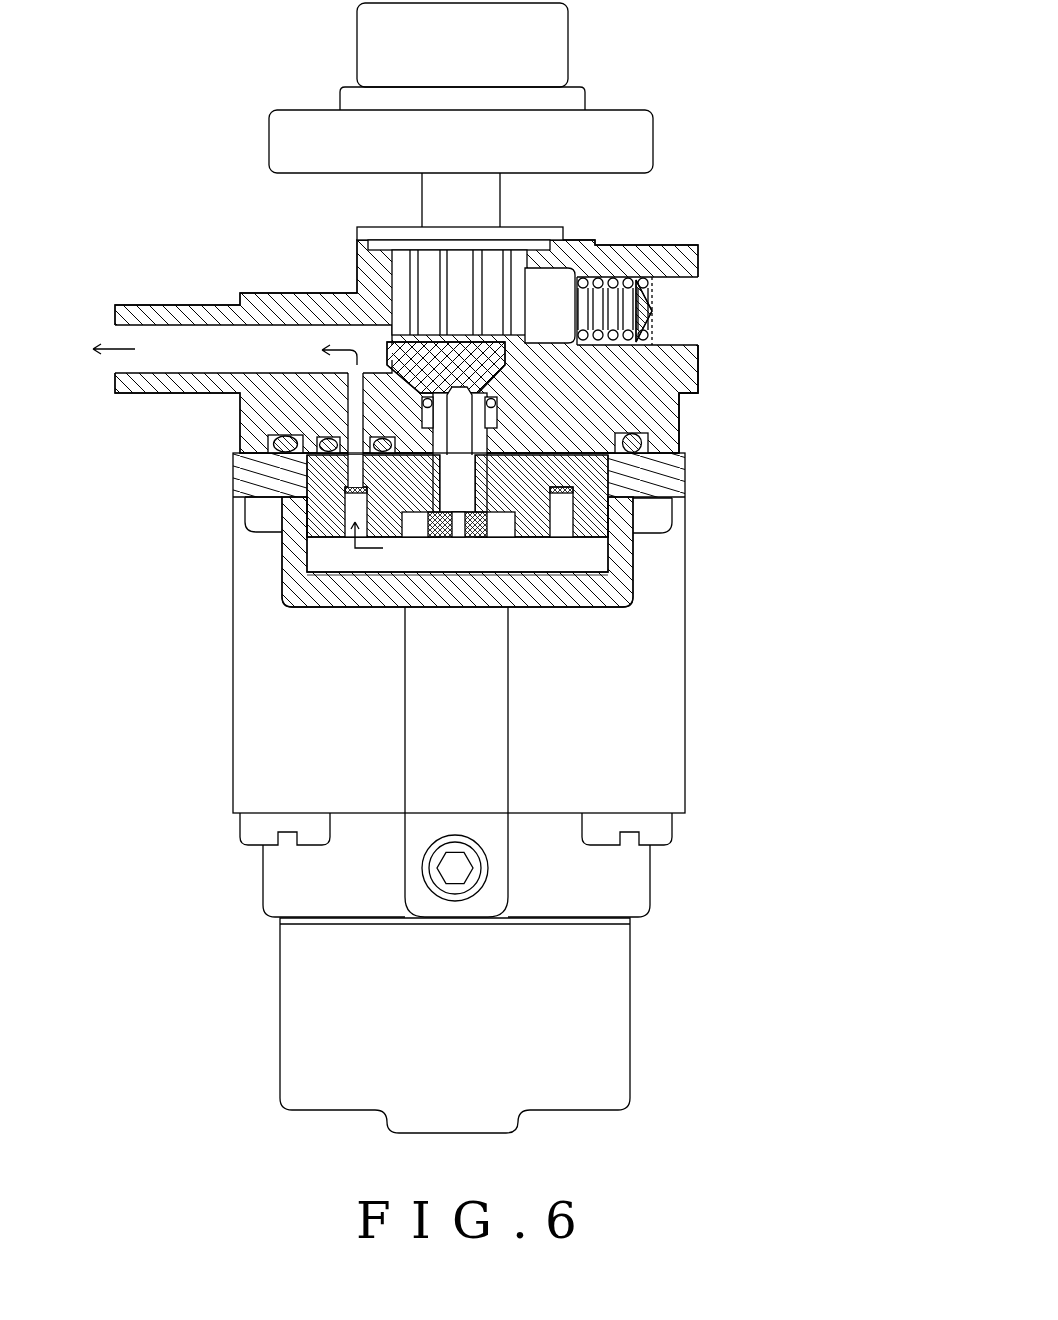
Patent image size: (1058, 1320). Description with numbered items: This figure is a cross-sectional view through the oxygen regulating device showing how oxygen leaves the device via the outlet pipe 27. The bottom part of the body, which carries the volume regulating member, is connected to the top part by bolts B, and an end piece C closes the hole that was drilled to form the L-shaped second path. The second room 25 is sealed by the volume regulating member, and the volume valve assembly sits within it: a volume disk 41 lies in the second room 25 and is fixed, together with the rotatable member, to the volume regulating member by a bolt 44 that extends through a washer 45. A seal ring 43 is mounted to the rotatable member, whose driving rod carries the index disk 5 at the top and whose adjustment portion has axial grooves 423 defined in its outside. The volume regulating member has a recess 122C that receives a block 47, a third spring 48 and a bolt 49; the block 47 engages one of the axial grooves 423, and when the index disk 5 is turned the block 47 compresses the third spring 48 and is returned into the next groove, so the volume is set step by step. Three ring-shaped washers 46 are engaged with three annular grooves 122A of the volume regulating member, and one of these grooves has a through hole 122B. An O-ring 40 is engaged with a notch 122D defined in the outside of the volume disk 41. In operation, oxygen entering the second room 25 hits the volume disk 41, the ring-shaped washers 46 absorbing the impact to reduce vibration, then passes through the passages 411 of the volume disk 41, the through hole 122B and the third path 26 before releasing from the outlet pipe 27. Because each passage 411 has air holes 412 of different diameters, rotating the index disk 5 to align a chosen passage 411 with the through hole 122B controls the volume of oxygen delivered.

The index disk 5 is at (537, 68).
The axial grooves 423 is at (490, 275).
The block 47 is at (575, 287).
The bolt 49 is at (677, 300).
The third spring 48 is at (655, 325).
The recess 122C is at (700, 375).
The notch 122D is at (650, 437).
The O-ring 40 is at (690, 468).
The air holes 412 is at (672, 510).
The volume disk 41 is at (640, 533).
The passages 411 is at (640, 555).
The washer 45 is at (532, 532).
The bolt 44 is at (475, 540).
The outlet pipe 27 is at (160, 336).
The third path 26 is at (345, 378).
The seal ring 43 is at (397, 303).
The annular grooves 122A is at (330, 409).
The ring-shaped washers 46 is at (272, 450).
The through hole 122B is at (343, 478).
The second room 25 is at (312, 550).
The bolts B is at (655, 828).
The end piece C is at (465, 875).